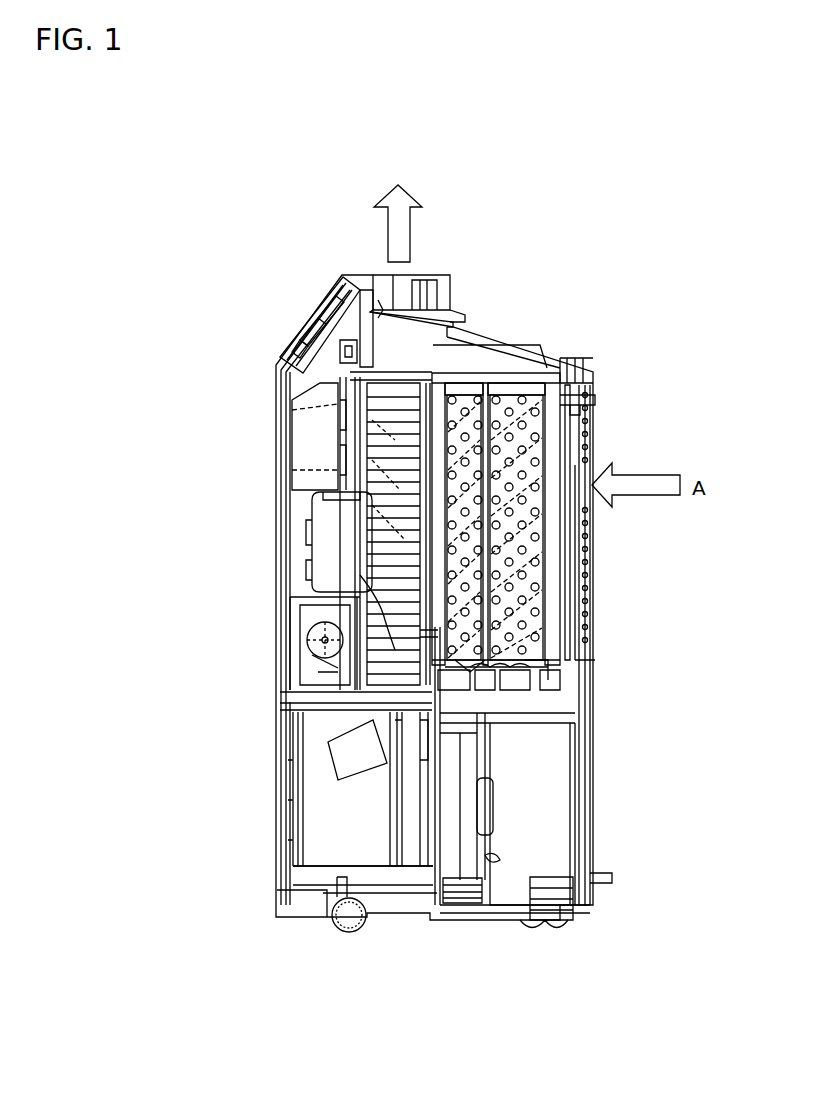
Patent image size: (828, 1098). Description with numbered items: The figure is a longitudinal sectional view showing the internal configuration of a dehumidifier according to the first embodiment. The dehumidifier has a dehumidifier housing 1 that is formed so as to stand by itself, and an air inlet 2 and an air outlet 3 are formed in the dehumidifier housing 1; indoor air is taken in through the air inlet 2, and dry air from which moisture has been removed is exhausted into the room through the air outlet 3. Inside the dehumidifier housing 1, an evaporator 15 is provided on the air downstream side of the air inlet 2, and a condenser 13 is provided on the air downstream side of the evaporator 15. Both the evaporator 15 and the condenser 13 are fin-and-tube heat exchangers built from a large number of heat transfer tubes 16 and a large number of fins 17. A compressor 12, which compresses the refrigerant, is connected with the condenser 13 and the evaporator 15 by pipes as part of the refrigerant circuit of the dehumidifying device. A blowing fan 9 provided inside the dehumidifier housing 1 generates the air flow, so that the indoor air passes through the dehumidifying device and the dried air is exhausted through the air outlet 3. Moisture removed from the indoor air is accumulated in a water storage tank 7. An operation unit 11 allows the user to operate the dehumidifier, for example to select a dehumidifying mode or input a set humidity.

The dehumidifier housing 1 is at (275, 636).
The air inlet 2 is at (590, 442).
The air outlet 3 is at (420, 280).
The water storage tank 7 is at (275, 802).
The blowing fan 9 is at (295, 422).
The operation unit 11 is at (320, 298).
The compressor 12 is at (530, 780).
The condenser 13 is at (545, 617).
The evaporator 15 is at (545, 558).
The heat transfer tubes 16 is at (492, 380).
The fins 17 is at (472, 380).